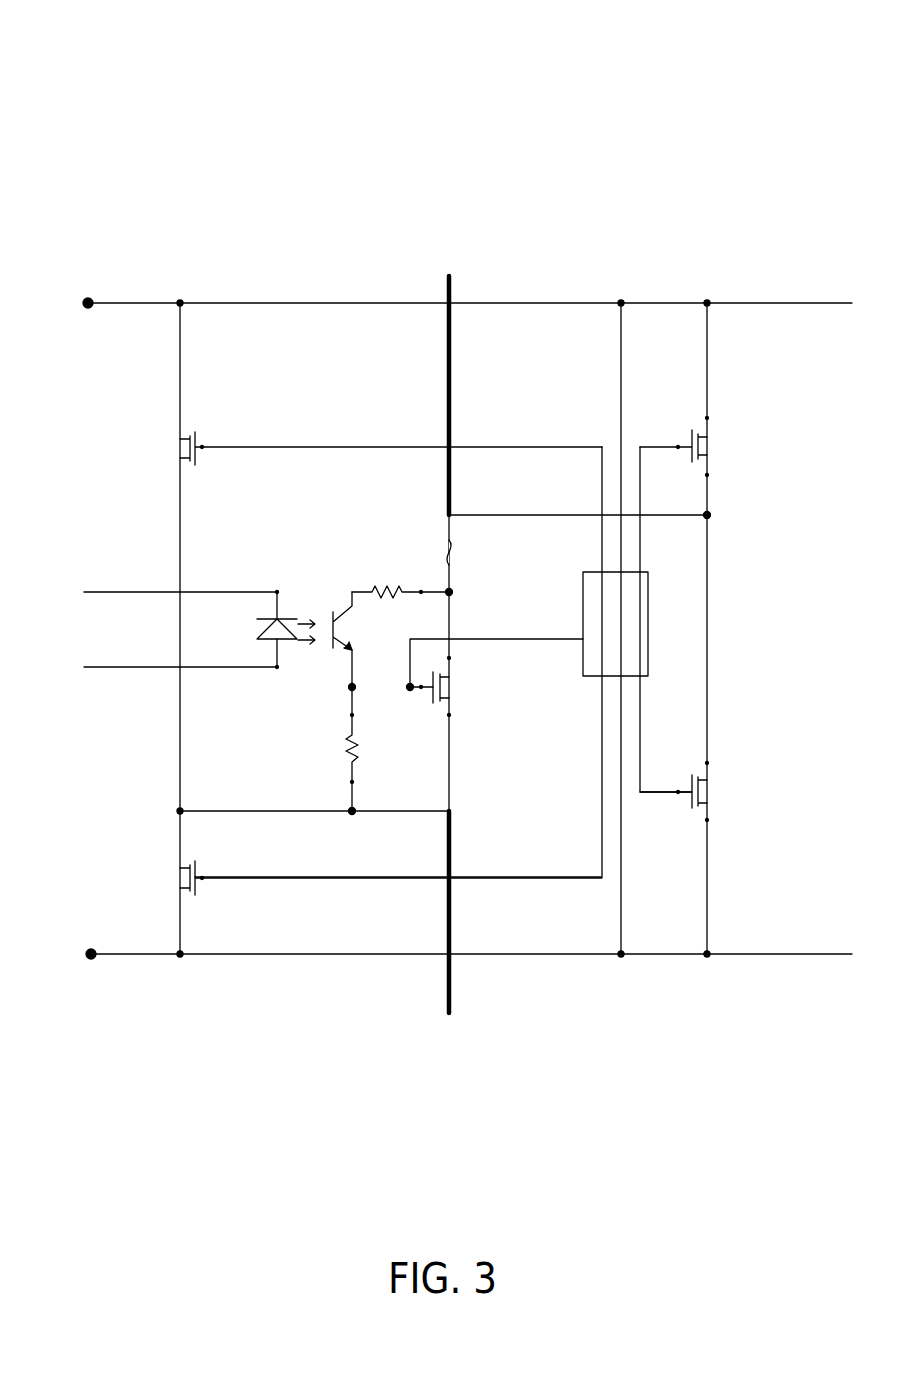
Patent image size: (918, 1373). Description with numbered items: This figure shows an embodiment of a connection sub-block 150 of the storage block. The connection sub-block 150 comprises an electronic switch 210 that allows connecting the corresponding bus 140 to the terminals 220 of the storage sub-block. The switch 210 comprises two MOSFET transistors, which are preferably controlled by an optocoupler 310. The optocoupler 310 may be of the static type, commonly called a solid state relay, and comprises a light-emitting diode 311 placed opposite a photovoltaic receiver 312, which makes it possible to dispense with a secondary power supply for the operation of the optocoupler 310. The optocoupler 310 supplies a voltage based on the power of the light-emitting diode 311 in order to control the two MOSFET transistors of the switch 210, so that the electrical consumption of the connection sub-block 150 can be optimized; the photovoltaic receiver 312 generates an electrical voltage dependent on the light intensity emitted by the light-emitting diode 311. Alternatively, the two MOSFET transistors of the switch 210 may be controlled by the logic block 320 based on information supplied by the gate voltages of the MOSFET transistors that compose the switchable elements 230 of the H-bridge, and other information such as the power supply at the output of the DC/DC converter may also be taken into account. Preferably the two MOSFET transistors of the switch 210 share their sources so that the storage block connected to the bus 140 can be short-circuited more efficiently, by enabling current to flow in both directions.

The connection sub-block 150 is at (165, 140).
The terminals 220 is at (88, 300).
The bus 140 is at (450, 282).
The switchable elements 230 is at (168, 447).
The optocoupler 310 is at (266, 636).
The light-emitting diode 311 is at (285, 617).
The photovoltaic receiver 312 is at (340, 607).
The logic block 320 is at (587, 628).
The switch 210 is at (447, 684).